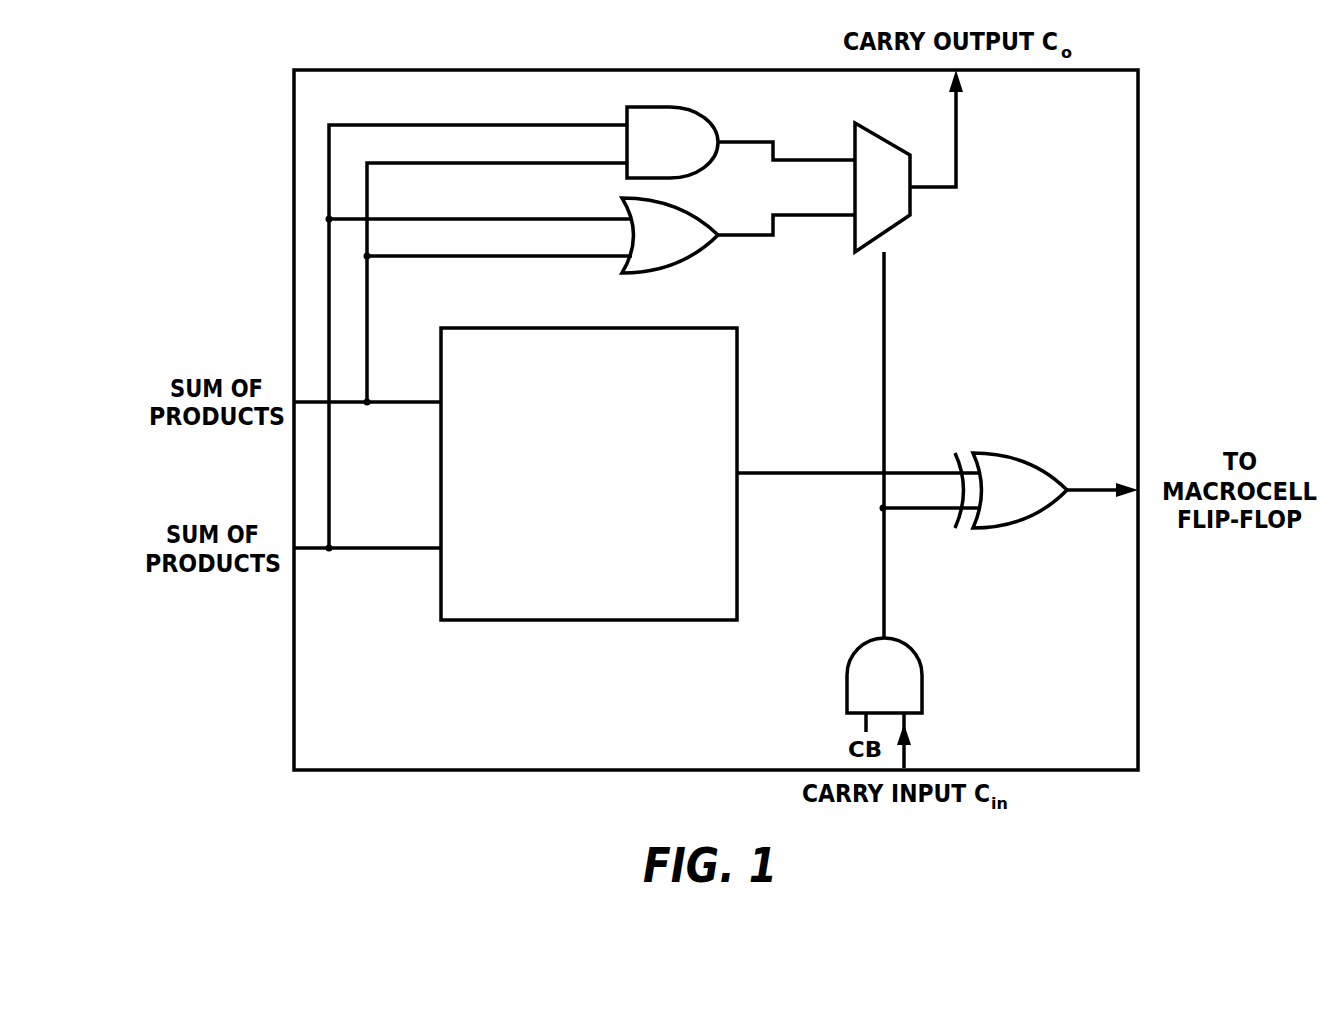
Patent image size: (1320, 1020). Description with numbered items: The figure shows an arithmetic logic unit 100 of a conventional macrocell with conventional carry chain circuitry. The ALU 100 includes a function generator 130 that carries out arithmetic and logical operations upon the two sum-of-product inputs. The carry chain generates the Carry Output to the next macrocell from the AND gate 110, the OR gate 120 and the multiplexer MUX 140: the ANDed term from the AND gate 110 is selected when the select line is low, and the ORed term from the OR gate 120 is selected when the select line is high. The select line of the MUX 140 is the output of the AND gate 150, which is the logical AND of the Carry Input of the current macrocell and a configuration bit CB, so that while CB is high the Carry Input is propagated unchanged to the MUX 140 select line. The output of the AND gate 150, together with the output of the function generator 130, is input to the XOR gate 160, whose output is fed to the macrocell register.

The arithmetic logic unit 100 is at (253, 673).
The AND gate 110 is at (694, 112).
The OR gate 120 is at (694, 203).
The function generator 130 is at (685, 328).
The multiplexer 140 is at (886, 134).
The AND gate 150 is at (905, 645).
The XOR gate 160 is at (1012, 455).